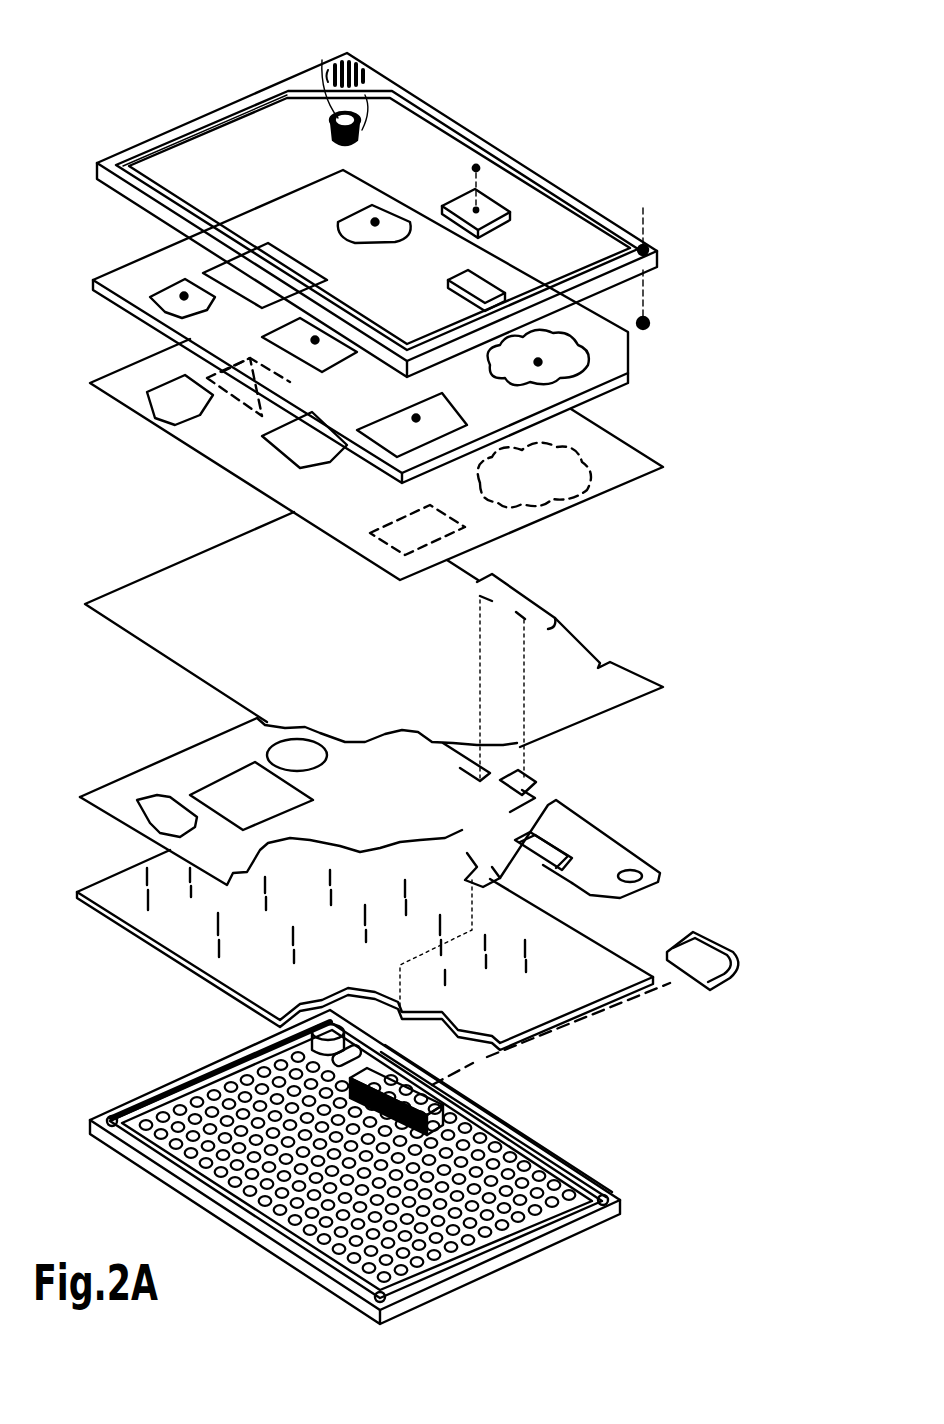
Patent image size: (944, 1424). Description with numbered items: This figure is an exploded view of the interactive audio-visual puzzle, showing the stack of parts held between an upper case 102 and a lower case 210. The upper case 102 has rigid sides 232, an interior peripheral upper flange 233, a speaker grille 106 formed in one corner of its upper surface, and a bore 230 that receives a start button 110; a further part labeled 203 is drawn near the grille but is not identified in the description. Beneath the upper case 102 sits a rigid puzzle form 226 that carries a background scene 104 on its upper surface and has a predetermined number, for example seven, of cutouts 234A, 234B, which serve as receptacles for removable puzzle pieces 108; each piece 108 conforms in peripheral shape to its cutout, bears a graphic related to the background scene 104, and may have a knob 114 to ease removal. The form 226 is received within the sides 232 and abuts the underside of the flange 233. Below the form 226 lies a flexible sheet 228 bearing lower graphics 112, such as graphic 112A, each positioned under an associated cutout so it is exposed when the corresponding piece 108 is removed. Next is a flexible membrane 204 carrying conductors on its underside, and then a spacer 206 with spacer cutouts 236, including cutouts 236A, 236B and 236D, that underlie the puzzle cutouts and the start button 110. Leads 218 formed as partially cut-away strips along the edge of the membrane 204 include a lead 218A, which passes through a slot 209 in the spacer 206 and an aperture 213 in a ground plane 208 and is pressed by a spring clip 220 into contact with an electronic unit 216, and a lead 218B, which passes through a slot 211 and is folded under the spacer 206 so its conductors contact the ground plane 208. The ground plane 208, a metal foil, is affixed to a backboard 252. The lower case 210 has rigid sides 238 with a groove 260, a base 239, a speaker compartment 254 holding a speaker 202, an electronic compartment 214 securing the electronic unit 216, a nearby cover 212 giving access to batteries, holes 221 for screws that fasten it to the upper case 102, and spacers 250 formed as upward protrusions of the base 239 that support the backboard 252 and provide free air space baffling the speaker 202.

The upper case 102 is at (545, 178).
The background scene 104 is at (622, 350).
The speaker grille 106 is at (370, 75).
The puzzle pieces 108 is at (510, 221).
The start button 110 is at (650, 322).
The lower graphics 112 is at (593, 490).
The lower graphic 112A is at (150, 402).
The knob 114 is at (479, 164).
The speaker 202 is at (362, 102).
The lens leader 203 is at (322, 58).
The flexible membrane 204 is at (605, 690).
The spacer 206 is at (572, 825).
The ground plane 208 is at (575, 995).
The slot 209 is at (518, 760).
The lower case 210 is at (575, 1245).
The slot 211 is at (540, 800).
The cover 212 is at (705, 975).
The aperture 213 is at (495, 885).
The electronic compartment 214 is at (455, 1100).
The electronic unit 216 is at (418, 1100).
The leads 218 is at (522, 597).
The lead 218A is at (393, 1040).
The lead 218B is at (577, 870).
The spring clip 220 is at (312, 983).
The holes 221 is at (105, 1112).
The puzzle form 226 is at (618, 378).
The flexible sheet 228 is at (660, 470).
The bore 230 is at (650, 240).
The rigid sides 232 is at (98, 176).
The upper flange 233 is at (232, 108).
The cutout 234A is at (493, 272).
The cutout 234B is at (345, 185).
The spacer cutouts 236 is at (325, 757).
The spacer cutout 236A is at (150, 810).
The spacer cutout 236B is at (313, 800).
The spacer cutout 236D is at (645, 860).
The rigid sides 238 is at (297, 1277).
The base 239 is at (508, 1277).
The spacers 250 is at (344, 1292).
The backboard 252 is at (98, 897).
The speaker compartment 254 is at (310, 1038).
The groove 260 is at (235, 1078).